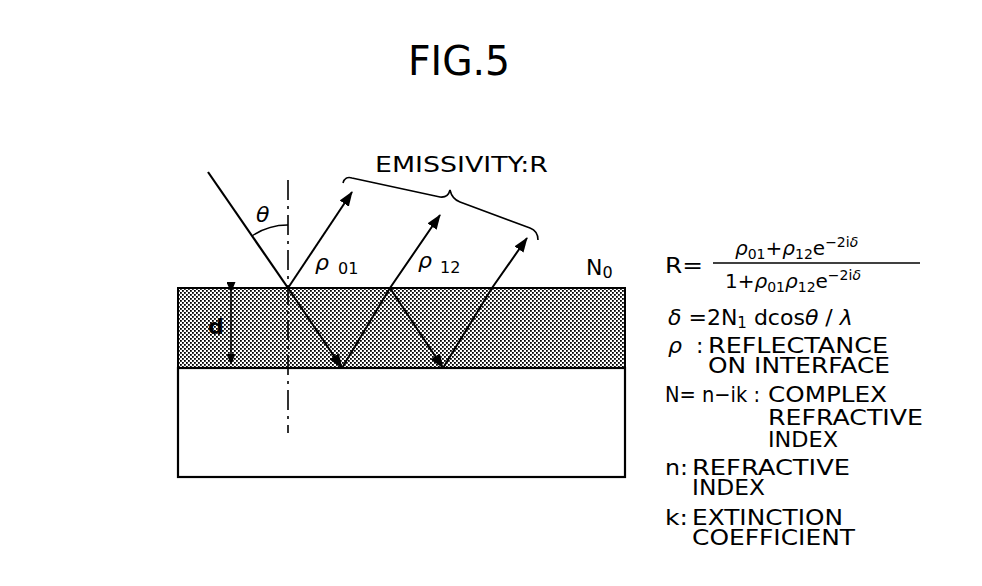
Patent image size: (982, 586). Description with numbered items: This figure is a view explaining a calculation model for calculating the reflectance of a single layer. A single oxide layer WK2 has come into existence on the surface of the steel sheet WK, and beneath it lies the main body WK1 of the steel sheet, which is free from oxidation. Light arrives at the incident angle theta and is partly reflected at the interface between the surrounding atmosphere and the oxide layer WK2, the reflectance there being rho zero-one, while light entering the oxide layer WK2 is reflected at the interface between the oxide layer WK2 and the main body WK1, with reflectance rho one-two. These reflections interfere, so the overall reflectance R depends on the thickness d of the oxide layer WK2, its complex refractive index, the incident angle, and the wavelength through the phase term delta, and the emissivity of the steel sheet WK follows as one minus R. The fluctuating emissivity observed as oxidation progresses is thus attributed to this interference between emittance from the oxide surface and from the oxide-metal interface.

The steel sheet WK is at (77, 304).
The main body of the steel sheet WK1 is at (178, 414).
The oxide layer WK2 is at (178, 326).